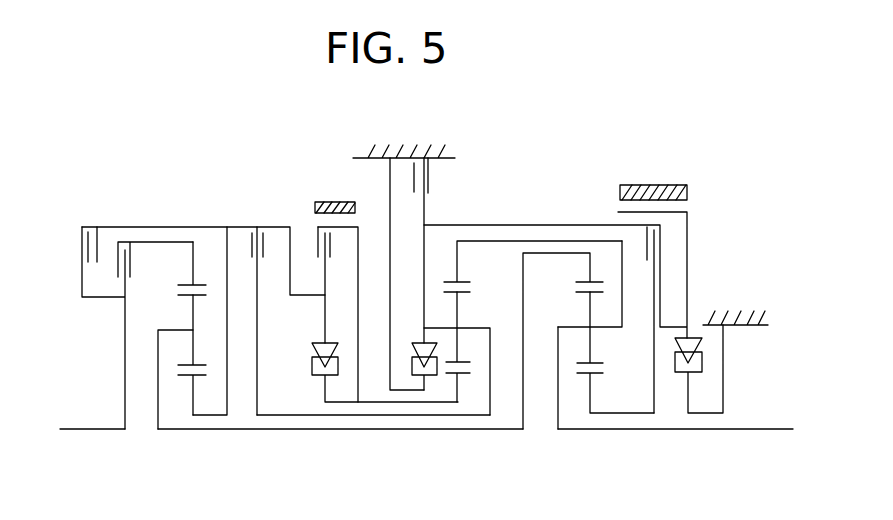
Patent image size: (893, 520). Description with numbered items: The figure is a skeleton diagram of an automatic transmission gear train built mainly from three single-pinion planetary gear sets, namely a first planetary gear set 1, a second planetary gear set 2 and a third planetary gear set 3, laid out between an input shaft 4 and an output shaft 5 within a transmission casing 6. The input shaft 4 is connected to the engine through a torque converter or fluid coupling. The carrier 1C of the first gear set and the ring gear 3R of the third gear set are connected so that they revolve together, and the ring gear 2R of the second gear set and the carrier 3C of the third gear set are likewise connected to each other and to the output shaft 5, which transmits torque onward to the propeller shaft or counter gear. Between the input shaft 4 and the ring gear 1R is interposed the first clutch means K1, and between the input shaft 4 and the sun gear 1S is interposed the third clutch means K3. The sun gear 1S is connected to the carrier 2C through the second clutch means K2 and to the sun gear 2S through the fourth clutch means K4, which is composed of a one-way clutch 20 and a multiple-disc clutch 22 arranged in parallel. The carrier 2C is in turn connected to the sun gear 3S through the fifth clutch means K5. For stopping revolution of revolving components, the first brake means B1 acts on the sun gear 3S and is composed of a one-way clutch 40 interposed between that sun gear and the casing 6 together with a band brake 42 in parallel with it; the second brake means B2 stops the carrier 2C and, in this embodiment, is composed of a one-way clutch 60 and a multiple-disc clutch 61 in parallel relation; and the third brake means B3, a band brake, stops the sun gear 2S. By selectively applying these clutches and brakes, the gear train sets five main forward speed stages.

The first planetary gear set 1 is at (199, 426).
The second planetary gear set 2 is at (456, 409).
The third planetary gear set 3 is at (585, 414).
The input shaft 4 is at (93, 429).
The output shaft 5 is at (770, 428).
The transmission casing 6 is at (440, 150).
The one-way clutch 20 is at (317, 362).
The multiple-disc clutch 22 is at (316, 243).
The one-way clutch 40 is at (692, 338).
The band brake 42 is at (668, 185).
The one-way clutch 60 is at (417, 370).
The multiple-disc clutch 61 is at (430, 182).
The ring gear 1R is at (200, 268).
The carrier 1C is at (175, 368).
The sun gear 1S is at (200, 356).
The ring gear 2R is at (533, 266).
The carrier 2C is at (458, 359).
The sun gear 2S is at (467, 351).
The ring gear 3R is at (563, 341).
The carrier 3C is at (588, 284).
The sun gear 3S is at (615, 352).
The first clutch means K1 is at (155, 262).
The second clutch means K2 is at (256, 309).
The third clutch means K3 is at (95, 231).
The fourth clutch means K4 is at (337, 246).
The fifth clutch means K5 is at (555, 312).
The first brake means B1 is at (697, 192).
The second brake means B2 is at (413, 308).
The third brake means B3 is at (335, 196).